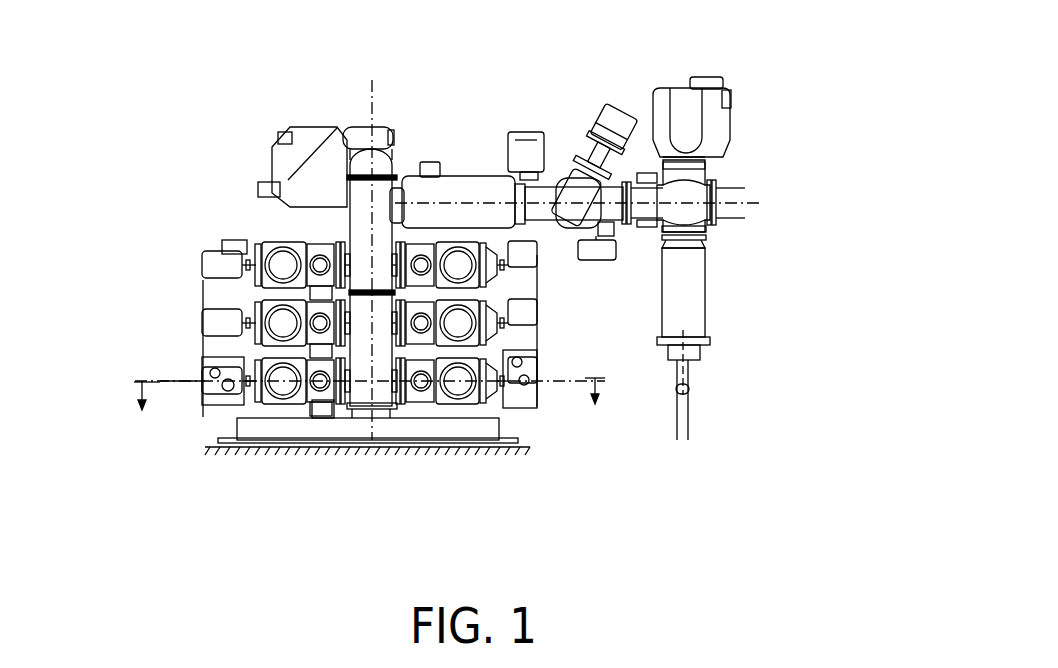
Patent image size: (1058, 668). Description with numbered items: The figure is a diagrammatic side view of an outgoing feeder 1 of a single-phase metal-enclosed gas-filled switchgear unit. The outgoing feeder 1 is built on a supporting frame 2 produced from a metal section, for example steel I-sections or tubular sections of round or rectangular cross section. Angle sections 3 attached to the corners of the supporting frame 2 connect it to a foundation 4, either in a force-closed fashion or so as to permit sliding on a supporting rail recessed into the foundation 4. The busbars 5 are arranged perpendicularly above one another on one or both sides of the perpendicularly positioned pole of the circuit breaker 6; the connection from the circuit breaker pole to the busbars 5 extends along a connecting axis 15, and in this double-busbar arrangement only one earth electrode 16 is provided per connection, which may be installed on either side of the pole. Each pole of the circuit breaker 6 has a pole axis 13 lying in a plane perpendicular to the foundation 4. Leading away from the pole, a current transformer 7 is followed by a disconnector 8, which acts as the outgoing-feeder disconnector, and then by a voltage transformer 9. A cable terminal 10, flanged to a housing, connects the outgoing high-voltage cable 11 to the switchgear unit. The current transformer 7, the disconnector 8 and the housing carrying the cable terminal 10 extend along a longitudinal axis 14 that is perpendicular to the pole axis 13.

The outgoing feeder 1 is at (220, 201).
The supporting frame 2 is at (237, 432).
The angle sections 3 is at (217, 450).
The foundation 4 is at (253, 450).
The busbars 5 is at (283, 388).
The circuit breaker 6 is at (380, 402).
The current transformer 7 is at (455, 185).
The disconnector 8 is at (567, 175).
The voltage transformer 9 is at (710, 125).
The cable terminal 10 is at (686, 288).
The outgoing high-voltage cable 11 is at (683, 422).
The pole axis 13 is at (370, 100).
The longitudinal axis 14 is at (770, 198).
The connecting axis 15 is at (165, 380).
The earth electrode 16 is at (322, 418).